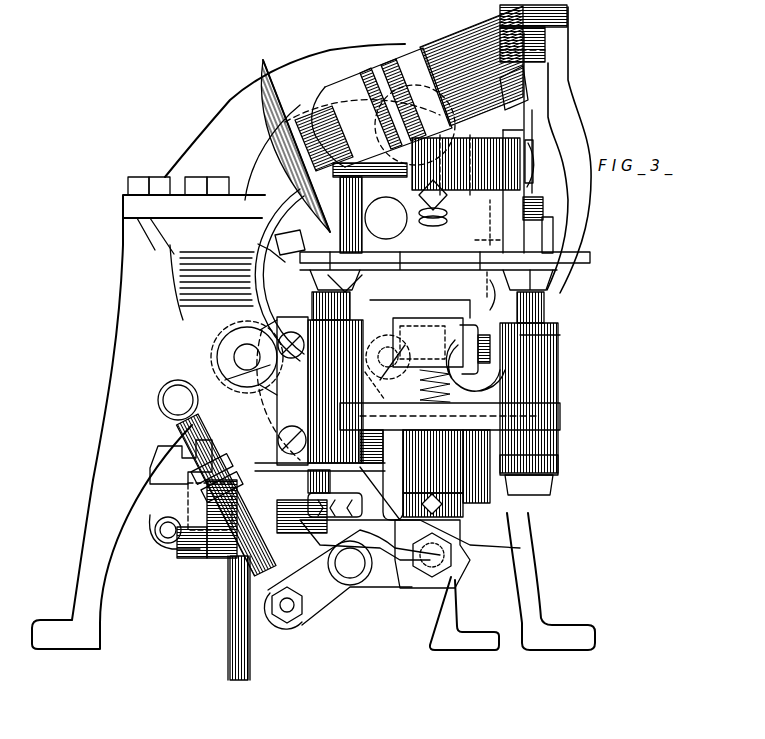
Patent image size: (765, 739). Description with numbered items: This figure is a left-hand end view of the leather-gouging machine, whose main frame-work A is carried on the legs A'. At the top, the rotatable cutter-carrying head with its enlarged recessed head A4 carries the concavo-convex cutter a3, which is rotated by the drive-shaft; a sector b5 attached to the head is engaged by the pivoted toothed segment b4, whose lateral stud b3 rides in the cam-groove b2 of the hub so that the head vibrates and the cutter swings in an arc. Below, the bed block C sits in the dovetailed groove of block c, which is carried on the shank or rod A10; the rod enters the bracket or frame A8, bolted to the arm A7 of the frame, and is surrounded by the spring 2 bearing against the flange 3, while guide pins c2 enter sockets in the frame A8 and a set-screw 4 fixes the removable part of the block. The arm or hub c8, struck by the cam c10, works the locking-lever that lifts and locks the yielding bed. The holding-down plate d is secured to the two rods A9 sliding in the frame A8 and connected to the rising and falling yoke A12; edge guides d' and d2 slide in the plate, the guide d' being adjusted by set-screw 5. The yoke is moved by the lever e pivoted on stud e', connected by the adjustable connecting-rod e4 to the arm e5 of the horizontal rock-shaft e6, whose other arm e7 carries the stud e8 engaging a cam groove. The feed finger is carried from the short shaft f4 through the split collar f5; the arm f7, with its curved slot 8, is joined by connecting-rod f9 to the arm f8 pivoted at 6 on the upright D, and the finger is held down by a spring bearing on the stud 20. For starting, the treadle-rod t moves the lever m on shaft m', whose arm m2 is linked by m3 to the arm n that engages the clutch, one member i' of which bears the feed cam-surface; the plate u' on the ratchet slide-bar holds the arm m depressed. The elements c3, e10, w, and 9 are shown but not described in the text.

The main frame-work A is at (260, 262).
The legs A' is at (313, 537).
The enlarged recessed head A4 is at (350, 88).
The arm A7 is at (276, 432).
The bracket or frame A8 is at (556, 382).
The rods A9 is at (555, 308).
The shank or rod A10 is at (439, 462).
The yoke A12 is at (466, 588).
The cutter a3 is at (322, 88).
The cam-groove b2 is at (306, 224).
The stud b3 is at (418, 232).
The pivoted segment b4 is at (480, 198).
The sector b5 is at (426, 46).
The block c is at (395, 326).
The guide pins or studs c2 is at (401, 463).
The bracket c3 is at (445, 582).
The arm or hub c8 is at (458, 400).
The cam c10 is at (286, 286).
The holding-down plate d is at (428, 259).
The edge guide d' is at (324, 277).
The edge guide d2 is at (580, 258).
The upright D is at (553, 91).
The lever e is at (352, 548).
The stud e' is at (350, 563).
The adjustable connecting-rod e4 is at (246, 420).
The arm e5 is at (216, 372).
The horizontal rock-shaft e6 is at (232, 346).
The arm e7 is at (262, 250).
The stud e8 is at (247, 357).
The guide e10 is at (257, 508).
The short shaft f4 is at (533, 160).
The split collar f5 is at (447, 140).
The arm f7 is at (530, 190).
The arm f8 is at (514, 122).
The connecting-rod f9 is at (540, 212).
The clutch member i' is at (238, 379).
The lever m is at (320, 490).
The shaft m' is at (207, 533).
The arm m2 is at (428, 578).
The connecting-link m3 is at (472, 512).
The arm n is at (556, 440).
The treadle-rod t is at (230, 632).
The short bar or plate u' is at (159, 462).
The roller w is at (163, 544).
The spring 2 is at (450, 416).
The flange 3 is at (497, 295).
The set-screw 4 is at (560, 356).
The set-screw 5 is at (320, 262).
The pivot 6 is at (497, 14).
The curved slot 8 is at (375, 386).
The block 9 is at (502, 200).
The stud 20 is at (292, 393).